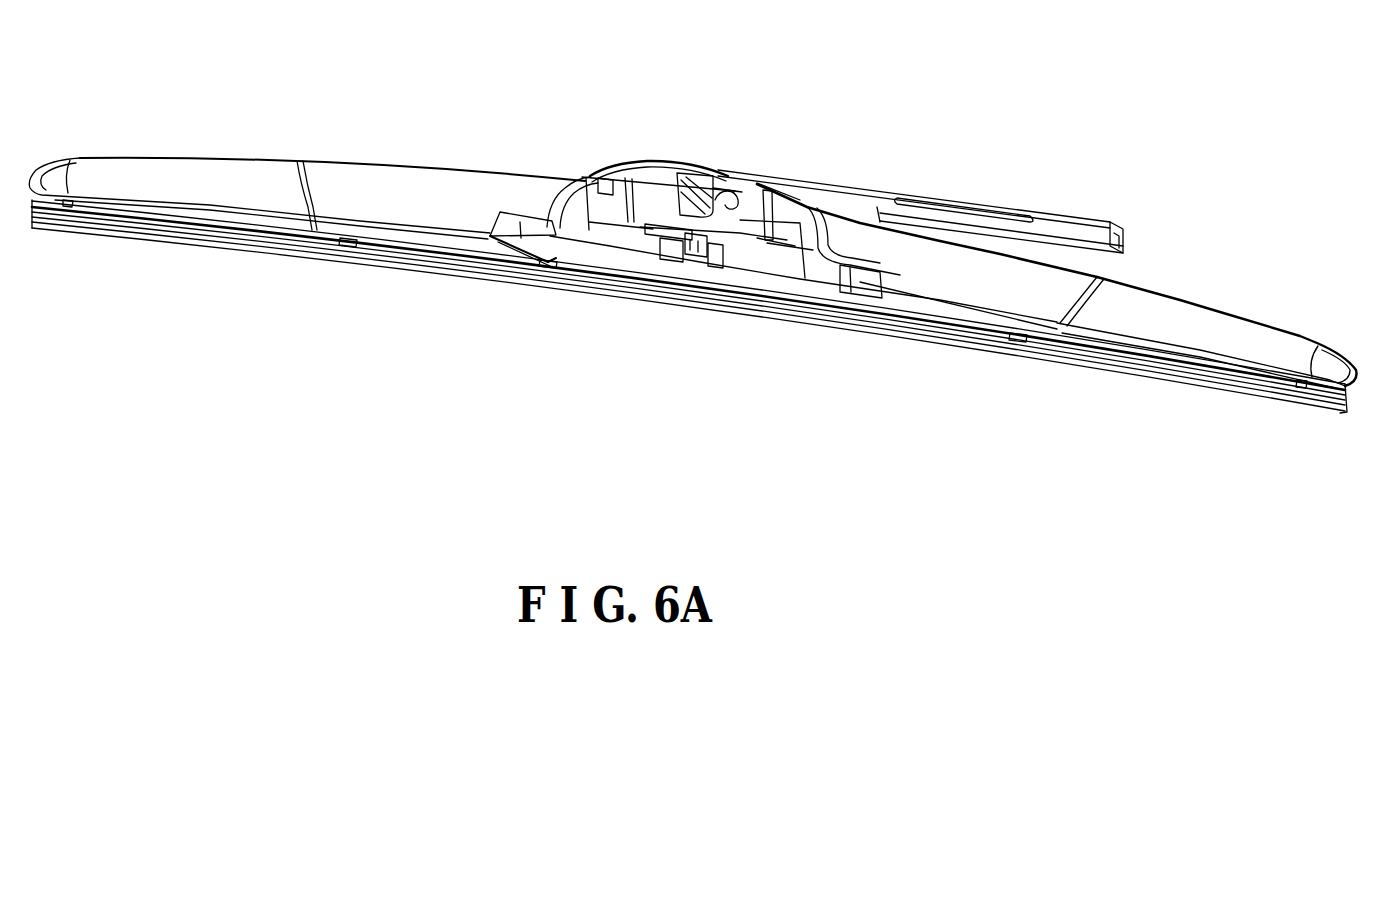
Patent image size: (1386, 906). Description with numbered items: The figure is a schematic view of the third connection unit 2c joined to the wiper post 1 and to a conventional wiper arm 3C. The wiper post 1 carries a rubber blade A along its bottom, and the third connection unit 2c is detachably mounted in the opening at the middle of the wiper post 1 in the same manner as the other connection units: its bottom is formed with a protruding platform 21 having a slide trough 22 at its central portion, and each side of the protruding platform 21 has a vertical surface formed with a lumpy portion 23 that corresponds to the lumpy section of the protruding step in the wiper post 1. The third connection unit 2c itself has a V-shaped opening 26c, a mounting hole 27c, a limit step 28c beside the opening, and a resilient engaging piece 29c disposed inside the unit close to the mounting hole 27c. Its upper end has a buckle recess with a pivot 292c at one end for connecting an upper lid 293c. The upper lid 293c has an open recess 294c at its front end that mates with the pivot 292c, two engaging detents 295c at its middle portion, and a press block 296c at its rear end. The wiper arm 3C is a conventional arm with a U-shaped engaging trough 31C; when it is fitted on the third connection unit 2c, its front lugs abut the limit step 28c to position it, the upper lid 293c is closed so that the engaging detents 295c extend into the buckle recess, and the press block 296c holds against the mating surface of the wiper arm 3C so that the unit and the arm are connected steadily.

The wiper post 1 is at (1250, 333).
The rubber blade A is at (1243, 387).
The wiper arm 3C is at (1067, 223).
The U-shaped engaging trough 31C is at (1120, 243).
The slide trough 22 is at (865, 208).
The third connection unit 2c is at (790, 183).
The mounting hole 27c is at (722, 186).
The resilient engaging piece 29c is at (752, 186).
The upper lid 293c is at (637, 163).
The engaging detents 295c is at (658, 163).
The open recess 294c is at (600, 165).
The pivot 292c is at (647, 151).
The press block 296c is at (695, 166).
The limit step 28c is at (668, 215).
The V-shaped opening 26c is at (697, 262).
The protruding platform 21 is at (727, 218).
The lumpy portion 23 is at (750, 240).